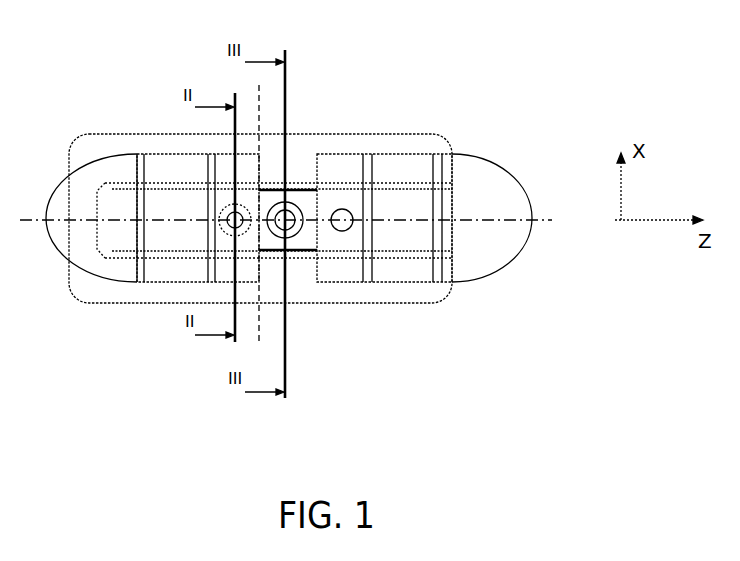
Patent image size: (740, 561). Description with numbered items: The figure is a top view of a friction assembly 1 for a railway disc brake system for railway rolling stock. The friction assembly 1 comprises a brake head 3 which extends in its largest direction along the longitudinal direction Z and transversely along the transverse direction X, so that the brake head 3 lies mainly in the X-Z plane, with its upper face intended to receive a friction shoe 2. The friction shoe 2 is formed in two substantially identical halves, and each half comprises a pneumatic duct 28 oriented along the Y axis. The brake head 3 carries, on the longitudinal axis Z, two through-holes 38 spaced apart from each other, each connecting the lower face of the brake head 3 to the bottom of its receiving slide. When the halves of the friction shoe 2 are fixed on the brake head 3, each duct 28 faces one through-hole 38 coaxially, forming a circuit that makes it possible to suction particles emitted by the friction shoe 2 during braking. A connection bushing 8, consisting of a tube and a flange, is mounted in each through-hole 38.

The friction assembly 1 is at (277, 192).
The friction shoe 2 is at (102, 175).
The brake head 3 is at (85, 287).
The connection bushing 8 is at (299, 205).
The duct 28 is at (344, 206).
The through-hole 38 is at (294, 229).